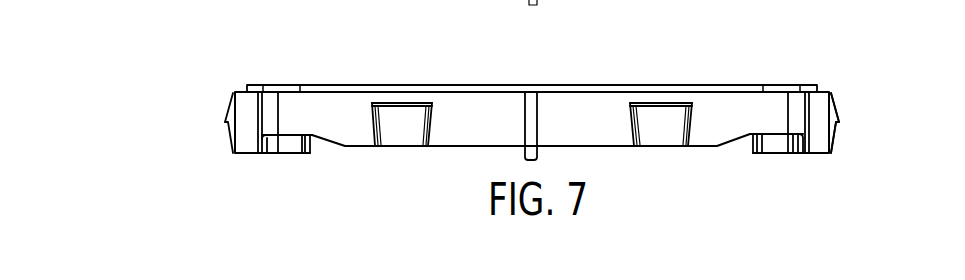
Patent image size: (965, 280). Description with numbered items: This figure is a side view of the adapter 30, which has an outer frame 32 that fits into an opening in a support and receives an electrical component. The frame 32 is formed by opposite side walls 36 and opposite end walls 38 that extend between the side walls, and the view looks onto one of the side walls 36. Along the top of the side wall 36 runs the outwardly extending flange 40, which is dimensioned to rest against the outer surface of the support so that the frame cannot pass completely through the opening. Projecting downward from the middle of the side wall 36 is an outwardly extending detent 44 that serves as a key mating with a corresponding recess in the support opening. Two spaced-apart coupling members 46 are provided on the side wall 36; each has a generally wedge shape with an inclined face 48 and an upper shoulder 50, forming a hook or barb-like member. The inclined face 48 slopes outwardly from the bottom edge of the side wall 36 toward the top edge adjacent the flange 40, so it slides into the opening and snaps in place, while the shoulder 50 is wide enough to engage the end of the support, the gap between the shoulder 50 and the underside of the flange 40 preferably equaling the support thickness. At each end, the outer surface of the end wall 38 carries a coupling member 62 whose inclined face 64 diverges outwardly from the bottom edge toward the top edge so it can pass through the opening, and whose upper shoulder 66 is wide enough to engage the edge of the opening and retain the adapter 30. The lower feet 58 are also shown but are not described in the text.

The adapter 30 is at (841, 65).
The outer frame 32 is at (746, 84).
The side walls 36 is at (567, 127).
The end walls 38 is at (834, 97).
The outwardly extending flange 40 is at (551, 86).
The outwardly extending detent 44 is at (524, 128).
The coupling members 46 is at (366, 120).
The inclined face 48 is at (400, 135).
The upper shoulder 50 is at (413, 103).
The foot 58 is at (287, 152).
The coupling member 62 is at (844, 128).
The inclined face 64 is at (230, 133).
The upper shoulder 66 is at (232, 113).